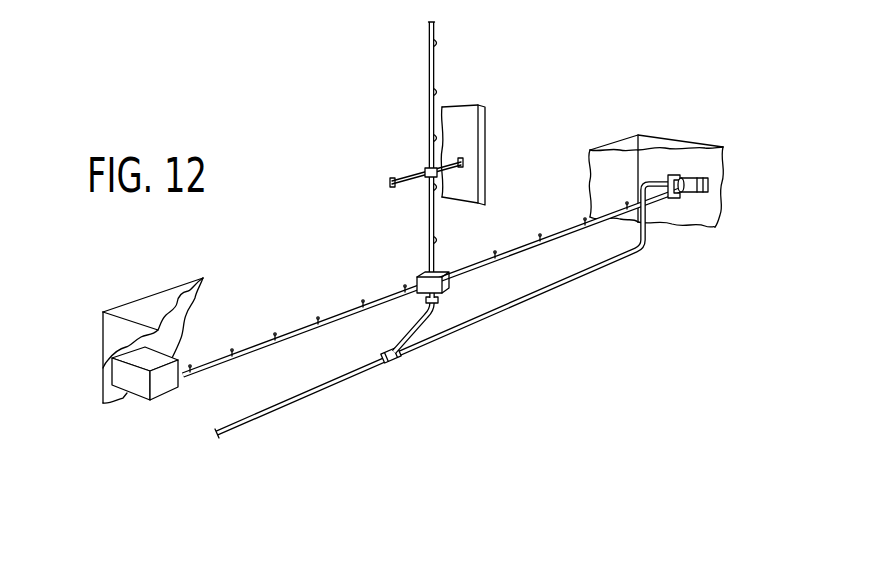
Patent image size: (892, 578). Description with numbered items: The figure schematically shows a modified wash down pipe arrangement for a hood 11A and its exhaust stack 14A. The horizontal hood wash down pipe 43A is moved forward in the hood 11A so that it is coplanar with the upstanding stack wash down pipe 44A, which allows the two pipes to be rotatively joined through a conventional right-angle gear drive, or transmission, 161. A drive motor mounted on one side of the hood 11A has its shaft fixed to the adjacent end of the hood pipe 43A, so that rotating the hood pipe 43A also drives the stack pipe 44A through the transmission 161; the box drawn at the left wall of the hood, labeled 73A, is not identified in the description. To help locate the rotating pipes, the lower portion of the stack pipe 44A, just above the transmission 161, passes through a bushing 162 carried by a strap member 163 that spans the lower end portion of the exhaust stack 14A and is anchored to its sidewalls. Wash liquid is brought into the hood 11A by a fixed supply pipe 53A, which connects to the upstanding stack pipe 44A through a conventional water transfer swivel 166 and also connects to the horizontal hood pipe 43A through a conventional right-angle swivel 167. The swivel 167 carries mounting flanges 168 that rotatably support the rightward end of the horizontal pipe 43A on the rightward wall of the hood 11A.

The hood 11A is at (112, 330).
The exhaust stack 14A is at (465, 113).
The horizontal hood wash down pipe 43A is at (297, 336).
The upstanding stack wash down pipe 44A is at (428, 147).
The fixed supply pipe 53A is at (293, 400).
The control box 73A is at (124, 381).
The right-angle gear drive (transmission) 161 is at (445, 284).
The bushing 162 is at (428, 181).
The strap member 163 is at (438, 172).
The water transfer swivel 166 is at (438, 303).
The right-angle swivel 167 is at (683, 180).
The mounting flanges 168 is at (704, 186).